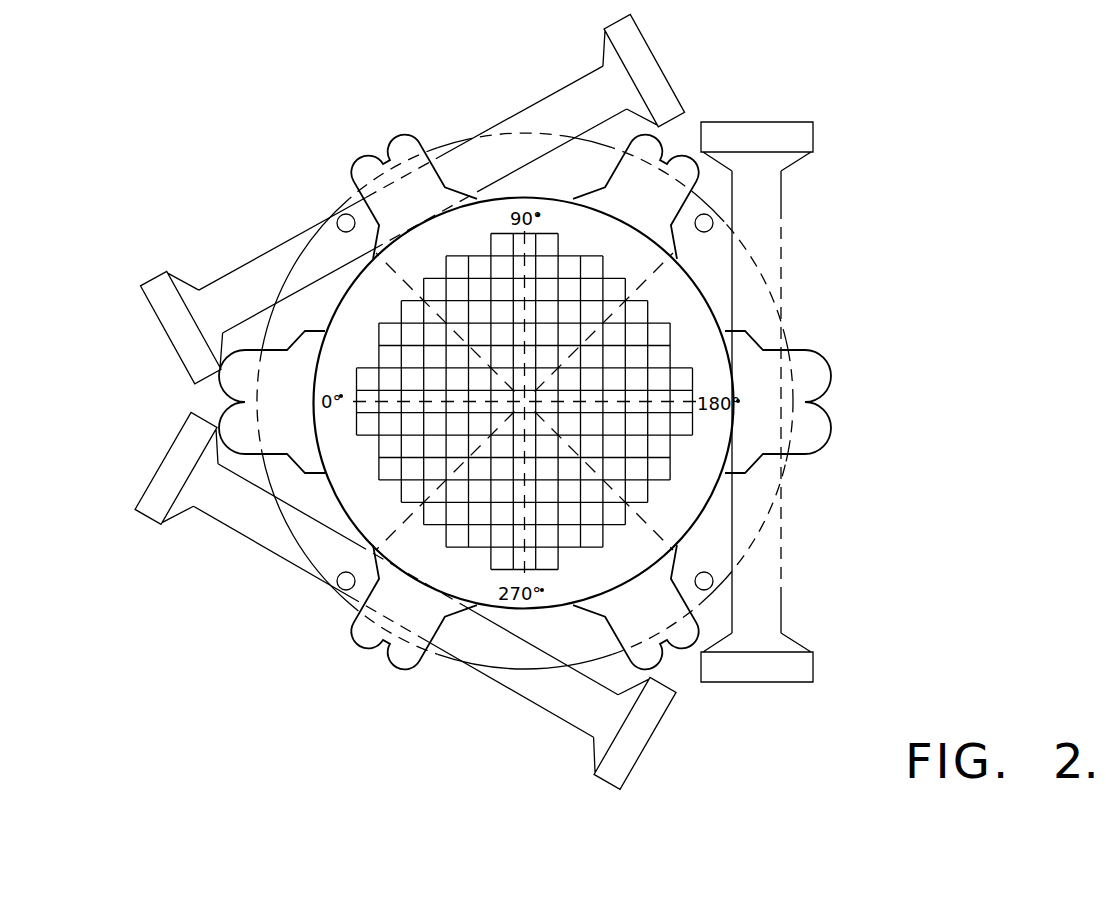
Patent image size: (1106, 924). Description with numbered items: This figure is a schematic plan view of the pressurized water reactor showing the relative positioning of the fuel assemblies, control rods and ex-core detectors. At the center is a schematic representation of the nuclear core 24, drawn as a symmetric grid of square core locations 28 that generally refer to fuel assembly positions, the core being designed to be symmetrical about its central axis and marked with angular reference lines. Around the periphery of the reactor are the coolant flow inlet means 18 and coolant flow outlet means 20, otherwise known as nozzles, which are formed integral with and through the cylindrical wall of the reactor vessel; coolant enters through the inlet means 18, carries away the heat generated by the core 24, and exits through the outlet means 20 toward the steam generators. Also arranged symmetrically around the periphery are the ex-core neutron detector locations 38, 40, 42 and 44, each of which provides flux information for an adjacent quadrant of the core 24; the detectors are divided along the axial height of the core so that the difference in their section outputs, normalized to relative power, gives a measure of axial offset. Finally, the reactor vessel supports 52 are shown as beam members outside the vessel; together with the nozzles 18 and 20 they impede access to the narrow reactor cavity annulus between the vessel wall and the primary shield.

The coolant flow inlet means 18 is at (402, 153).
The coolant flow outlet means 20 is at (680, 170).
The nuclear core 24 is at (355, 492).
The fuel assemblies 28 is at (660, 466).
The ex-core neutron detector location 38 is at (340, 585).
The ex-core neutron detector location 40 is at (342, 218).
The ex-core neutron detector location 42 is at (713, 225).
The ex-core neutron detector location 44 is at (712, 585).
The reactor vessel supports 52 is at (240, 292).